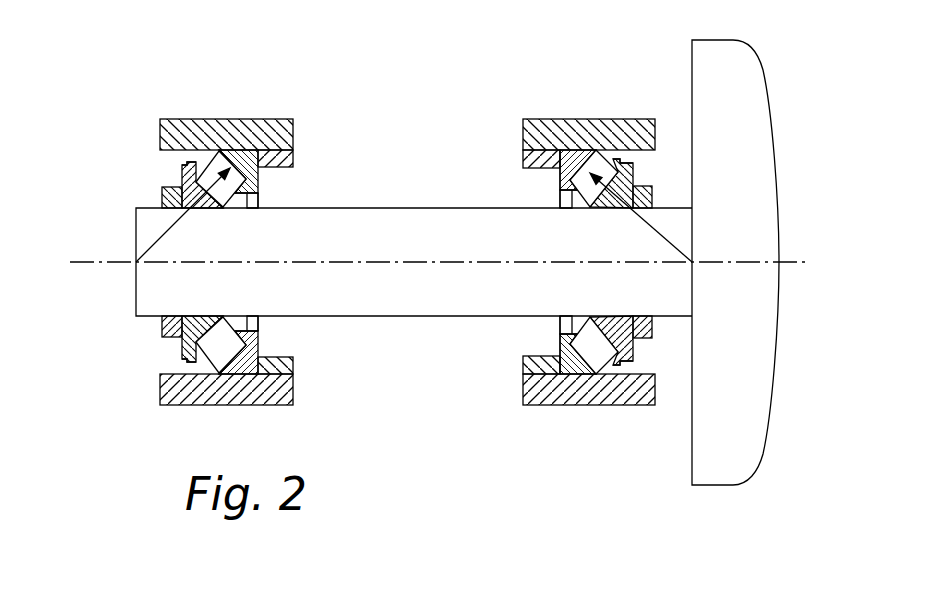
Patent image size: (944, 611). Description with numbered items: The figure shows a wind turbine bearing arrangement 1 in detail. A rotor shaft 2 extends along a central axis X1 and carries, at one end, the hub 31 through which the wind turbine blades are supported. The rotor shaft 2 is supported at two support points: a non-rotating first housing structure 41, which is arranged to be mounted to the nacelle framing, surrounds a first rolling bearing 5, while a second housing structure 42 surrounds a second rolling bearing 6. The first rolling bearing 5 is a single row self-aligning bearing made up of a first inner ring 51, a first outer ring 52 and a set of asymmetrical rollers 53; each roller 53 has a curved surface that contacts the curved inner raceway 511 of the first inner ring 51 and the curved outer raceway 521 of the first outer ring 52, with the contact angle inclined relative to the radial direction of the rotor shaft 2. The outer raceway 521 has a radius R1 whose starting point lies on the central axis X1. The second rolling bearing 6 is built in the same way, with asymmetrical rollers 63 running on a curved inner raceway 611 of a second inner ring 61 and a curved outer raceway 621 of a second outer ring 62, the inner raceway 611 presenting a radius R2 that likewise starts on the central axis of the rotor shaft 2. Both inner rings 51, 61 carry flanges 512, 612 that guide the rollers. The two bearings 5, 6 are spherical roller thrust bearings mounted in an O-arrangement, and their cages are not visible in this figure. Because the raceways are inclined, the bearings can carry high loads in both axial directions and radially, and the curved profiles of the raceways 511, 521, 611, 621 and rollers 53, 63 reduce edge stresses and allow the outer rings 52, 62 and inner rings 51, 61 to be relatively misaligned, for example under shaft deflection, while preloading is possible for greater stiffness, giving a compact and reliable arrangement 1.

The wind turbine bearing arrangement 1 is at (457, 250).
The rotor shaft 2 is at (451, 317).
The hub 31 is at (768, 407).
The first housing structure 41 is at (538, 120).
The second housing structure 42 is at (187, 119).
The first rolling bearing 5 is at (660, 195).
The first inner ring 51 is at (722, 234).
The inner raceway 511 is at (652, 206).
The flange 512 is at (626, 160).
The first outer ring 52 is at (606, 210).
The outer raceway 521 is at (577, 168).
The roller 53 is at (560, 202).
The second rolling bearing 6 is at (229, 207).
The second inner ring 61 is at (227, 226).
The inner raceway 611 is at (225, 207).
The flange 612 is at (183, 175).
The second outer ring 62 is at (296, 207).
The outer raceway 621 is at (252, 155).
The roller 63 is at (252, 200).
The radius R1 is at (668, 240).
The radius R2 is at (173, 222).
The central axis X1 is at (88, 262).